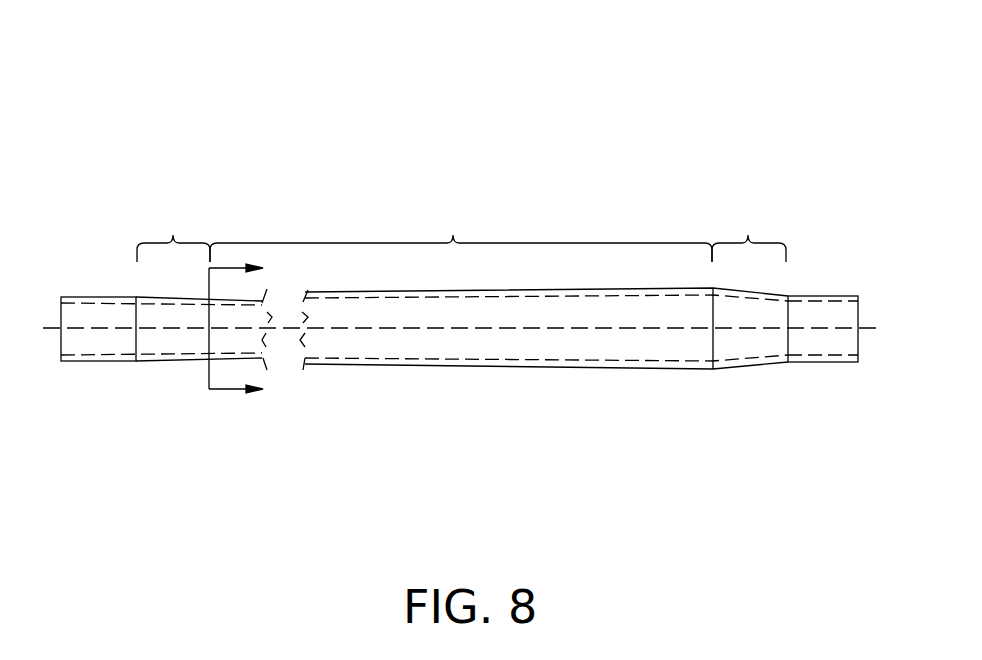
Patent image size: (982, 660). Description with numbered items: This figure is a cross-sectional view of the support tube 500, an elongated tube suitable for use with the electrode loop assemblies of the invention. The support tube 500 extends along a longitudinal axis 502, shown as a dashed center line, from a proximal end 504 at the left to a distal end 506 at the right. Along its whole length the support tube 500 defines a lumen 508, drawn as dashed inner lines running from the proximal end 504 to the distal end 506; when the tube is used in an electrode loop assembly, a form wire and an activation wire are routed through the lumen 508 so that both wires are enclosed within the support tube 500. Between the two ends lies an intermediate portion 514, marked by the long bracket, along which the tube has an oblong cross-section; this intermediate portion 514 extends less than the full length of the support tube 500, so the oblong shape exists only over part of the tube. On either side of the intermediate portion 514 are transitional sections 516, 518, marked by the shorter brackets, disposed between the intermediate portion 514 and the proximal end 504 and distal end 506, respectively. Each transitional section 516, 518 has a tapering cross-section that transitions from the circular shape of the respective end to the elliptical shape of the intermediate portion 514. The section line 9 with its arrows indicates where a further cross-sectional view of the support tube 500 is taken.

The support tube 500 is at (227, 203).
The longitudinal axis 502 is at (532, 330).
The proximal end 504 is at (110, 370).
The distal end 506 is at (827, 382).
The lumen 508 is at (428, 346).
The intermediate portion 514 is at (461, 230).
The transitional section 516 is at (173, 230).
The transitional section 518 is at (749, 230).
The line 9- 9 is at (252, 329).